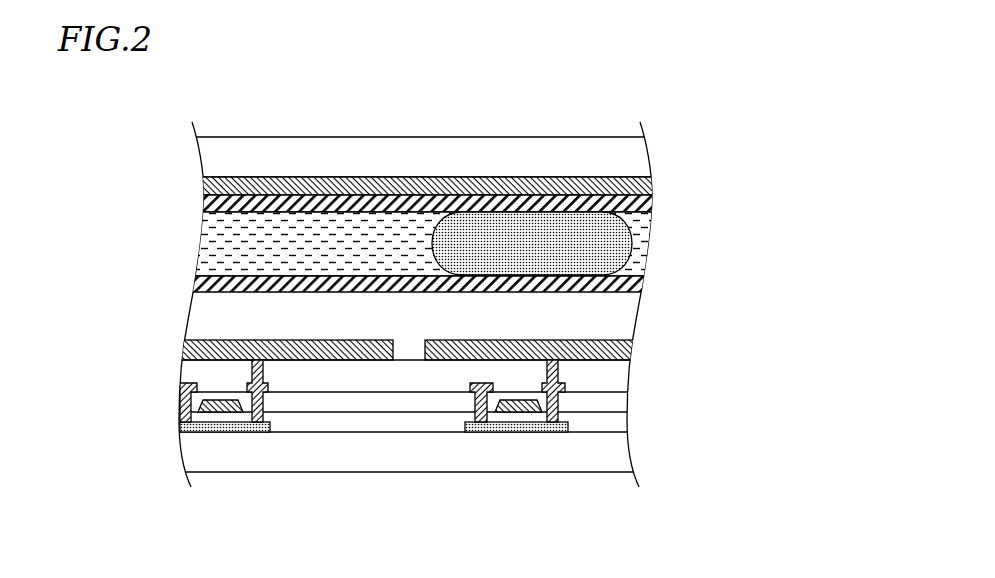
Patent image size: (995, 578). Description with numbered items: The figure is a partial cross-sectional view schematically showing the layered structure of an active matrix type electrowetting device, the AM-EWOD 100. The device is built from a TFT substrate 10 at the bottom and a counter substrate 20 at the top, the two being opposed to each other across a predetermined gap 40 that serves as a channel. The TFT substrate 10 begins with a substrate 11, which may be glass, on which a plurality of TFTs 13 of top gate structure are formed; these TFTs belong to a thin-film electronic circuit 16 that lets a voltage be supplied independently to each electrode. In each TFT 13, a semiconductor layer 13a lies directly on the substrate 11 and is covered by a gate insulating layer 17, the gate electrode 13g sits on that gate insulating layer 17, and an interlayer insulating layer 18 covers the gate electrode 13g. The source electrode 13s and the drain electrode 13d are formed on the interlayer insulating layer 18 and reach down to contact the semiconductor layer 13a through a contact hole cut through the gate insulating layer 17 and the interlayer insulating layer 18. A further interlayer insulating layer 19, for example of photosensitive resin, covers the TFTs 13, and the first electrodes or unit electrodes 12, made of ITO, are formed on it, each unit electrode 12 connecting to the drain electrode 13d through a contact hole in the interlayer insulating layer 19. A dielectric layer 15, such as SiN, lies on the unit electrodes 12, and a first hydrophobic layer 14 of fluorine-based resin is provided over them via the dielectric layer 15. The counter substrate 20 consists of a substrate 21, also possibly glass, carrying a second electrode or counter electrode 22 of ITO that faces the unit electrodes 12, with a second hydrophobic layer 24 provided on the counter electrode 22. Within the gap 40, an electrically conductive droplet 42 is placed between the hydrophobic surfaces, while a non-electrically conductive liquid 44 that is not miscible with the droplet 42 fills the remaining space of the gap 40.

The active matrix type electrowetting device (AM-EWOD) 100 is at (724, 87).
The TFT substrate 10 is at (455, 413).
The substrate 11 is at (622, 459).
The first electrode (unit electrode) 12 is at (633, 352).
The TFT 13 is at (390, 455).
The semiconductor layer 13a is at (538, 433).
The gate electrode 13g is at (507, 405).
The source electrode 13s is at (480, 433).
The drain electrode 13d is at (565, 433).
The first hydrophobic layer 14 is at (643, 284).
The dielectric layer 15 is at (627, 319).
The thin-film electronic circuit (TFT circuit) 16 is at (433, 400).
The gate insulating layer 17 is at (420, 422).
The interlayer insulating layer 18 is at (618, 404).
The interlayer insulating layer 19 is at (618, 384).
The counter substrate 20 is at (456, 176).
The substrate 21 is at (642, 153).
The second electrode (counter electrode) 22 is at (650, 182).
The second hydrophobic layer 24 is at (429, 203).
The gap (channel) 40 is at (430, 244).
The droplet 42 is at (625, 246).
The non-electrically conductive liquid 44 is at (232, 246).